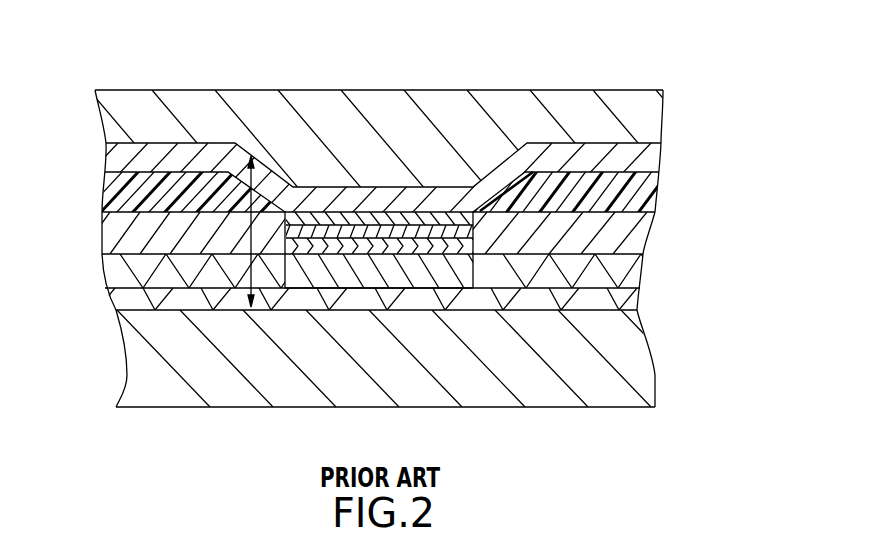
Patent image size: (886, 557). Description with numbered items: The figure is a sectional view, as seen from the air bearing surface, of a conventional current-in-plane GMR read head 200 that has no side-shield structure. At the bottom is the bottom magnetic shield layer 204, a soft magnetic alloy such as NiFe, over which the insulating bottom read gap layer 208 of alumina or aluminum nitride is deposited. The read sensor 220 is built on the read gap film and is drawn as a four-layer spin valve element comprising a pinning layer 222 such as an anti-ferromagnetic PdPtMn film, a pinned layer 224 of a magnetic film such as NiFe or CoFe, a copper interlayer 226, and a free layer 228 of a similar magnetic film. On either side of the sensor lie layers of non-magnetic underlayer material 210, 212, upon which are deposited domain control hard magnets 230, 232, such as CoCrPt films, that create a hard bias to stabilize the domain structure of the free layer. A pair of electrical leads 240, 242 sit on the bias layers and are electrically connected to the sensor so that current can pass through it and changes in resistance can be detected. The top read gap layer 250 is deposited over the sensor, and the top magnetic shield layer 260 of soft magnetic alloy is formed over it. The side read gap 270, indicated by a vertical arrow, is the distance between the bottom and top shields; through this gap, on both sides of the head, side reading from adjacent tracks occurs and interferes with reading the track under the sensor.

The CIP GMR read head 200 is at (101, 77).
The bottom magnetic shield layer 204 is at (648, 378).
The bottom read gap layer 208 is at (637, 297).
The non-magnetic underlayer material 210 is at (633, 268).
The non-magnetic underlayer material 212 is at (117, 267).
The read sensor 220 is at (322, 288).
The pinning layer 222 is at (385, 273).
The pinned layer 224 is at (450, 243).
The interlayer 226 is at (403, 230).
The free layer 228 is at (425, 218).
The domain control hard magnet 230 is at (642, 232).
The domain control hard magnet 232 is at (105, 230).
The electrical lead 240 is at (657, 190).
The electrical lead 242 is at (105, 187).
The top read gap layer 250 is at (650, 158).
The top magnetic shield layer 260 is at (655, 115).
The side read gap 270 is at (251, 272).